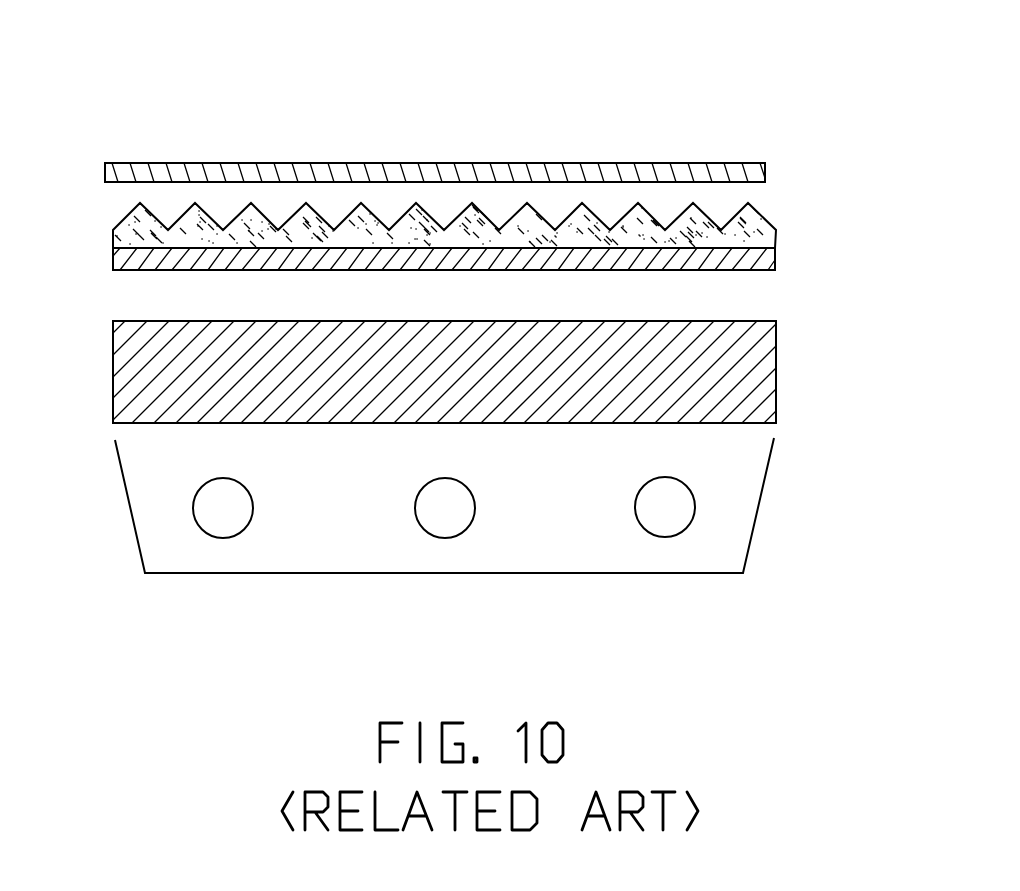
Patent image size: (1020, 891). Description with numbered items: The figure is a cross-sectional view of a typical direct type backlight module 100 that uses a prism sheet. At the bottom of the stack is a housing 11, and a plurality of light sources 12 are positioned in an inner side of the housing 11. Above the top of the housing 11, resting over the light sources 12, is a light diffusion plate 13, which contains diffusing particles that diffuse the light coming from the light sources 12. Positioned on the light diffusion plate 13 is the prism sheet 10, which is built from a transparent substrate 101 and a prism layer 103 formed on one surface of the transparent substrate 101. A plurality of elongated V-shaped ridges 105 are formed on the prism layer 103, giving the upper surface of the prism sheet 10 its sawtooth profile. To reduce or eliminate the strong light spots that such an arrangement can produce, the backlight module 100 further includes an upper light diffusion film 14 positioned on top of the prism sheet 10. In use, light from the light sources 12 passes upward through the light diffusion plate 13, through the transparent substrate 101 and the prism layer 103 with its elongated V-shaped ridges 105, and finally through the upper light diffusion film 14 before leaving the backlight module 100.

The direct type backlight module 100 is at (283, 78).
The upper light diffusion film 14 is at (766, 165).
The prism sheet 10 is at (860, 210).
The prism layer 103 is at (750, 241).
The elongated V-shaped ridges 105 is at (122, 229).
The transparent substrate 101 is at (762, 263).
The light diffusion plate 13 is at (776, 368).
The light sources 12 is at (673, 498).
The housing 11 is at (762, 518).